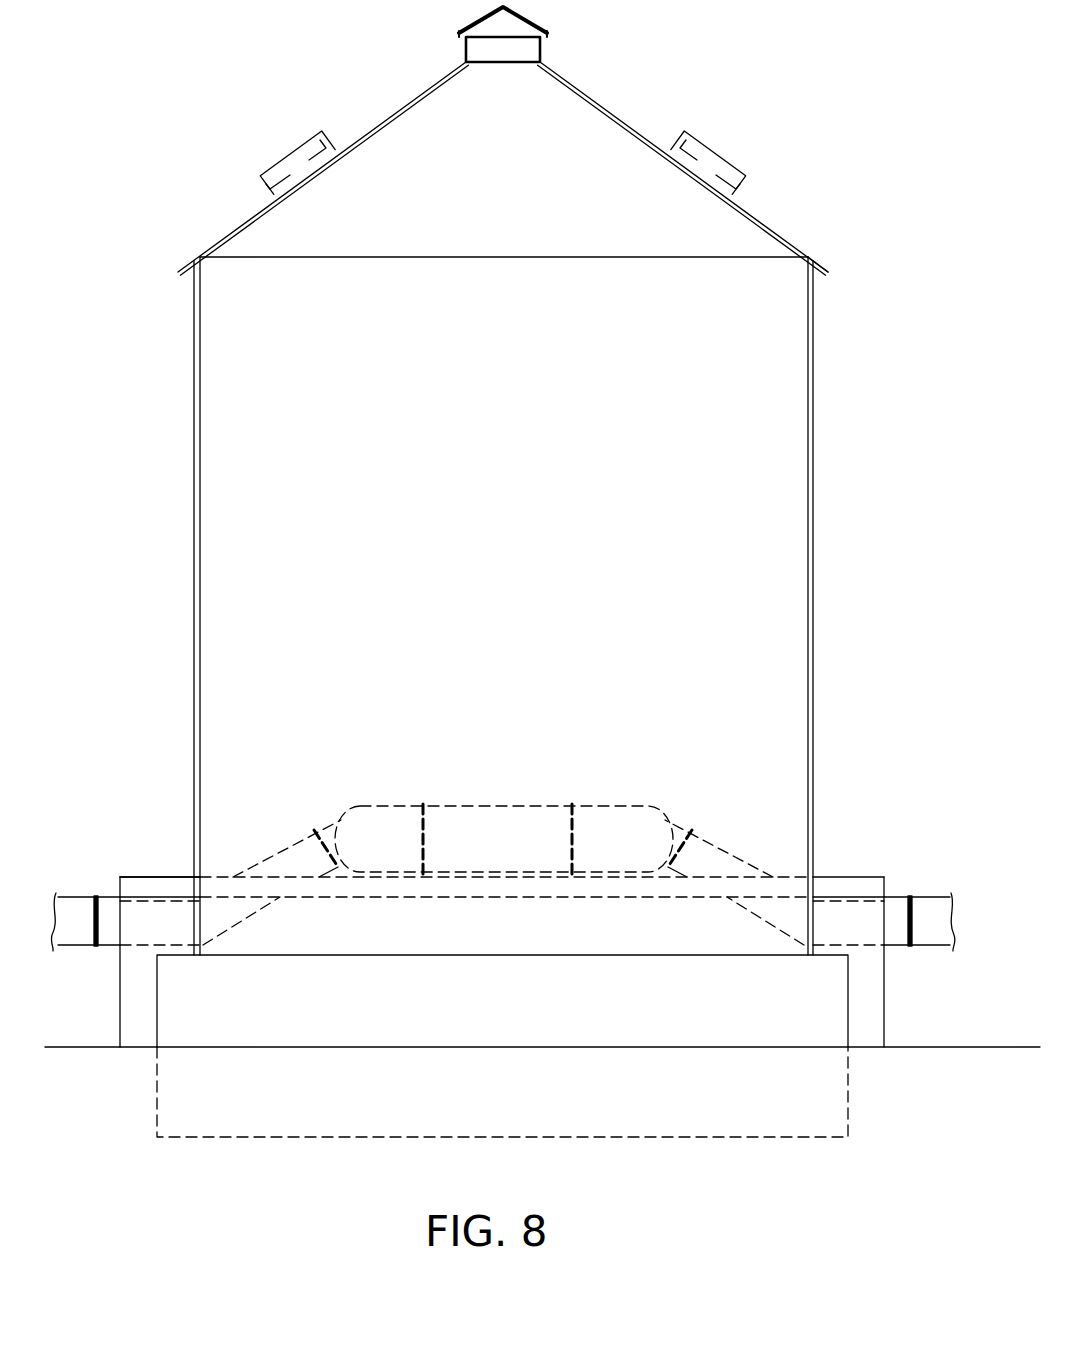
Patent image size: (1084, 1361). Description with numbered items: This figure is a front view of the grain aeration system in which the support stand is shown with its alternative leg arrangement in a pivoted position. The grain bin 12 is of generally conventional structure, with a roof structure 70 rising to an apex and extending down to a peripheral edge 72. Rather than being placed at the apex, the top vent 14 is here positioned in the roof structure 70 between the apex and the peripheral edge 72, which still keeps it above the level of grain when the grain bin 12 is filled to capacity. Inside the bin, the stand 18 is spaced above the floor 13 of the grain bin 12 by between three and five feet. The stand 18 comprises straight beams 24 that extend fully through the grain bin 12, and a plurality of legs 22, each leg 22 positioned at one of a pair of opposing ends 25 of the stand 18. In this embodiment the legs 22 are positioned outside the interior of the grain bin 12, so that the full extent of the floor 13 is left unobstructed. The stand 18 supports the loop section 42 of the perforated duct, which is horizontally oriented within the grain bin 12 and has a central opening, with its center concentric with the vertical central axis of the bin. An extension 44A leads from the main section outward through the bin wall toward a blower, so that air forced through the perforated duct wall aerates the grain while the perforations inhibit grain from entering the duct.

The grain bin 12 is at (813, 377).
The floor 13 is at (405, 955).
The top vent 14 is at (258, 132).
The stand 18 is at (165, 850).
The legs 22 is at (140, 1002).
The beams 24 is at (834, 887).
The opposing ends 25 is at (120, 887).
The loop section 42 is at (607, 830).
The extension 44A is at (718, 860).
The roof structure 70 is at (764, 220).
The peripheral edge 72 is at (829, 274).